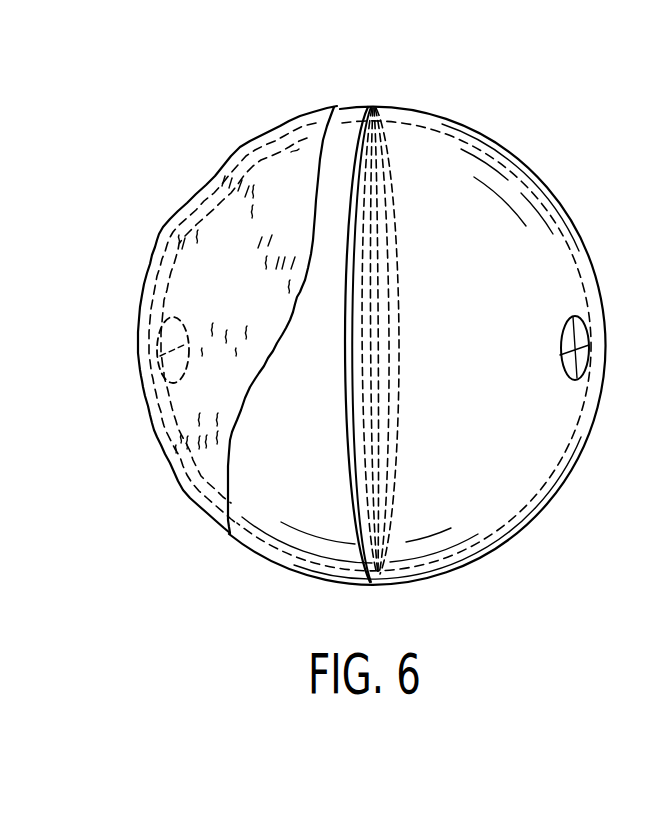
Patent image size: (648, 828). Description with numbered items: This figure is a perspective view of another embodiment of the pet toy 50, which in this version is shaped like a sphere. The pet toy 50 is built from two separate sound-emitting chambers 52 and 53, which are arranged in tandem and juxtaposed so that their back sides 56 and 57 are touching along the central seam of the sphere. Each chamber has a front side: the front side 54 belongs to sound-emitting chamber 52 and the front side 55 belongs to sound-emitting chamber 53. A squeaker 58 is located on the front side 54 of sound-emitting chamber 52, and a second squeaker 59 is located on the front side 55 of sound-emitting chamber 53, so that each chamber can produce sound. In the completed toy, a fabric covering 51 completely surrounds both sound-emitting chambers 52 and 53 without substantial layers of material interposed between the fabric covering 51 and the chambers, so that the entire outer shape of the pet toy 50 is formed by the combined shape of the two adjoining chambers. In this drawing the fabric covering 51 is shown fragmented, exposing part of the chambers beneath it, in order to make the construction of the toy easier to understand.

The pet toy 50 is at (371, 99).
The fabric covering 51 is at (268, 163).
The sound-emitting chamber 52 is at (478, 514).
The sound-emitting chamber 53 is at (306, 545).
The front side 54 is at (568, 423).
The front side 55 is at (183, 416).
The back side 56 is at (398, 345).
The back side 57 is at (345, 345).
The squeaker 58 is at (581, 335).
The squeaker 59 is at (183, 334).